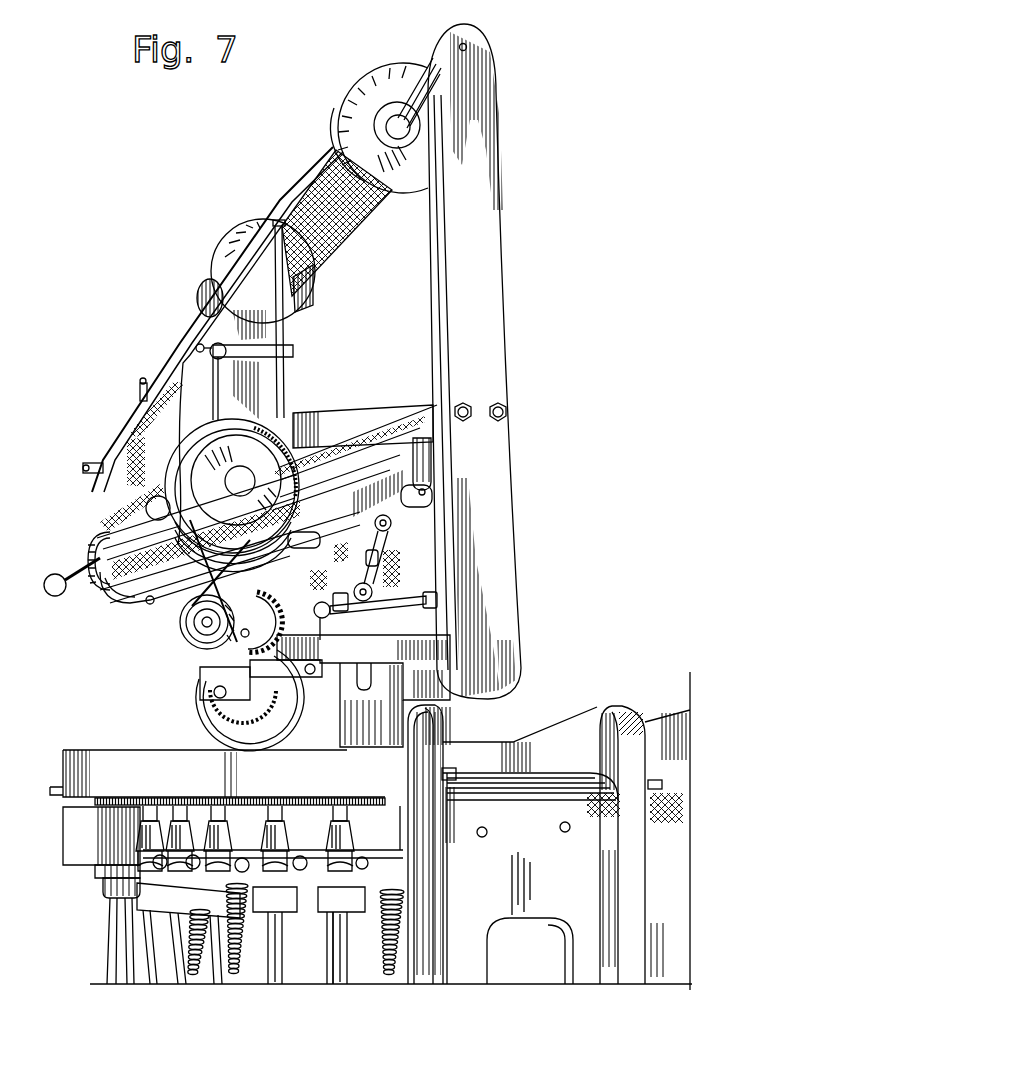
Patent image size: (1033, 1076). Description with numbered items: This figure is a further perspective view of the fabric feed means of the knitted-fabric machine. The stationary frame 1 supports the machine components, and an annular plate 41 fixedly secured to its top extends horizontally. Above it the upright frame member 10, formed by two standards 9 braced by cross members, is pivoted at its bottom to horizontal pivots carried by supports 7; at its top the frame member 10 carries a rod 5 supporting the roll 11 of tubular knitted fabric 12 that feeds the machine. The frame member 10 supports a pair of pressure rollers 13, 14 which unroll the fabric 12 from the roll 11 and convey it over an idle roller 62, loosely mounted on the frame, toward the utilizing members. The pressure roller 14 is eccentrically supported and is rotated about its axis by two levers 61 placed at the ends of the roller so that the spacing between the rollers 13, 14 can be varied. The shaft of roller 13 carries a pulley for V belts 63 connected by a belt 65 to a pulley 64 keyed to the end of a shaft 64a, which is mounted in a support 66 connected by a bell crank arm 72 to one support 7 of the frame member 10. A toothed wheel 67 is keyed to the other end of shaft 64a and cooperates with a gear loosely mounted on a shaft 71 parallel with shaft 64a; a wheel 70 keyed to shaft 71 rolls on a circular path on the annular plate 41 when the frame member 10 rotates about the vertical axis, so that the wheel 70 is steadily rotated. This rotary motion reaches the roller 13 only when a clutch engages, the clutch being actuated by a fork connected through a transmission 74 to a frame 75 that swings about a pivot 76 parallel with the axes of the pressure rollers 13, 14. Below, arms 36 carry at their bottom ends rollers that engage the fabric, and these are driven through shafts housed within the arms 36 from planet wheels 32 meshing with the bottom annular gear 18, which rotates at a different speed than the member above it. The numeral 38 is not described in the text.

The frame 1 is at (627, 678).
The rod 5 is at (399, 102).
The support 7 is at (370, 628).
The standard 9 is at (217, 407).
The frame member 10 is at (514, 250).
The roll 11 is at (352, 232).
The tubular knitted fabric 12 is at (202, 333).
The pressure roller 13 is at (100, 572).
The pressure roller 14 is at (100, 532).
The annular gear 18 is at (252, 895).
The planet wheel 32 is at (198, 798).
The arm 36 is at (335, 968).
The spring 38 is at (202, 962).
The annular plate 41 is at (85, 750).
The lever 61 is at (65, 575).
The idle roller 62 is at (403, 515).
The pulley for V belts 63 is at (298, 430).
The pulley 64 is at (181, 634).
The shaft 64a is at (205, 636).
The belt 65 is at (215, 562).
The support 66 is at (222, 660).
The toothed wheel 67 is at (268, 618).
The wheel 70 is at (238, 722).
The shaft 71 is at (215, 695).
The bell crank arm 72 is at (380, 655).
The transmission 74 is at (398, 562).
The frame 75 is at (384, 577).
The pivot 76 is at (150, 597).